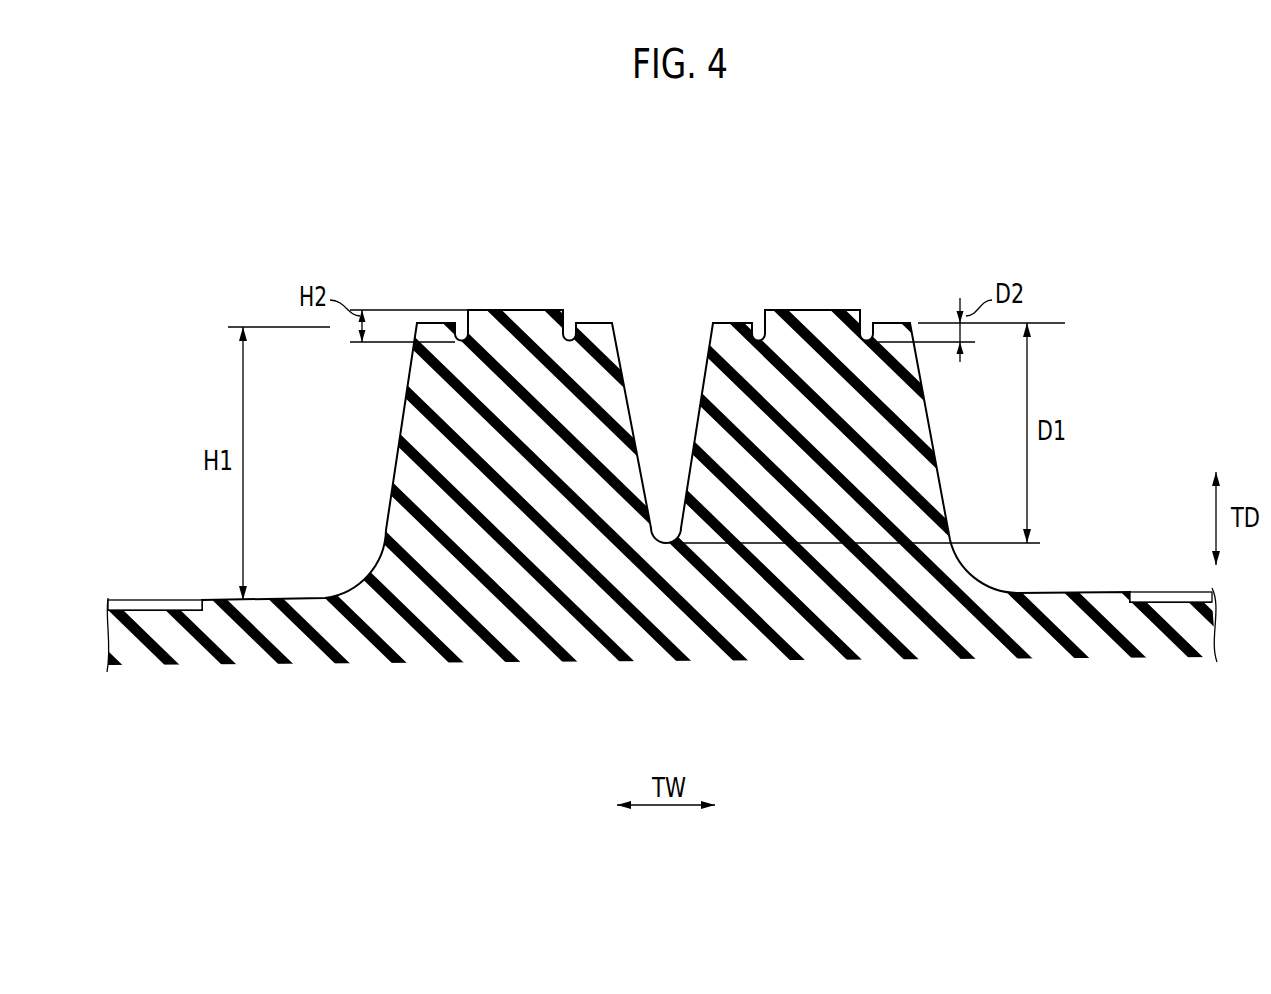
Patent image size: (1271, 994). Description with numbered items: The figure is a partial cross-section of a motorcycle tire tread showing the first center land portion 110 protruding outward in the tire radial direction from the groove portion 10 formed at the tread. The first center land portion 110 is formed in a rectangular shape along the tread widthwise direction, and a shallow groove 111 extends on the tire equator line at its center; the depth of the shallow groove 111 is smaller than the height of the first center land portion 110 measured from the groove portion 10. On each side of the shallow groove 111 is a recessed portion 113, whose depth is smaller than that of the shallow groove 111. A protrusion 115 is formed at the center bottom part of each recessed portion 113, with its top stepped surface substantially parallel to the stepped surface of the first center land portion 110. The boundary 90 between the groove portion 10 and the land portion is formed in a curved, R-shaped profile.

The groove portion 10 is at (150, 455).
The boundary 90 is at (352, 578).
The first center land portion 110 is at (950, 222).
The shallow groove 111 is at (668, 350).
The recessed portion 113 is at (462, 326).
The protrusion 115 is at (510, 310).